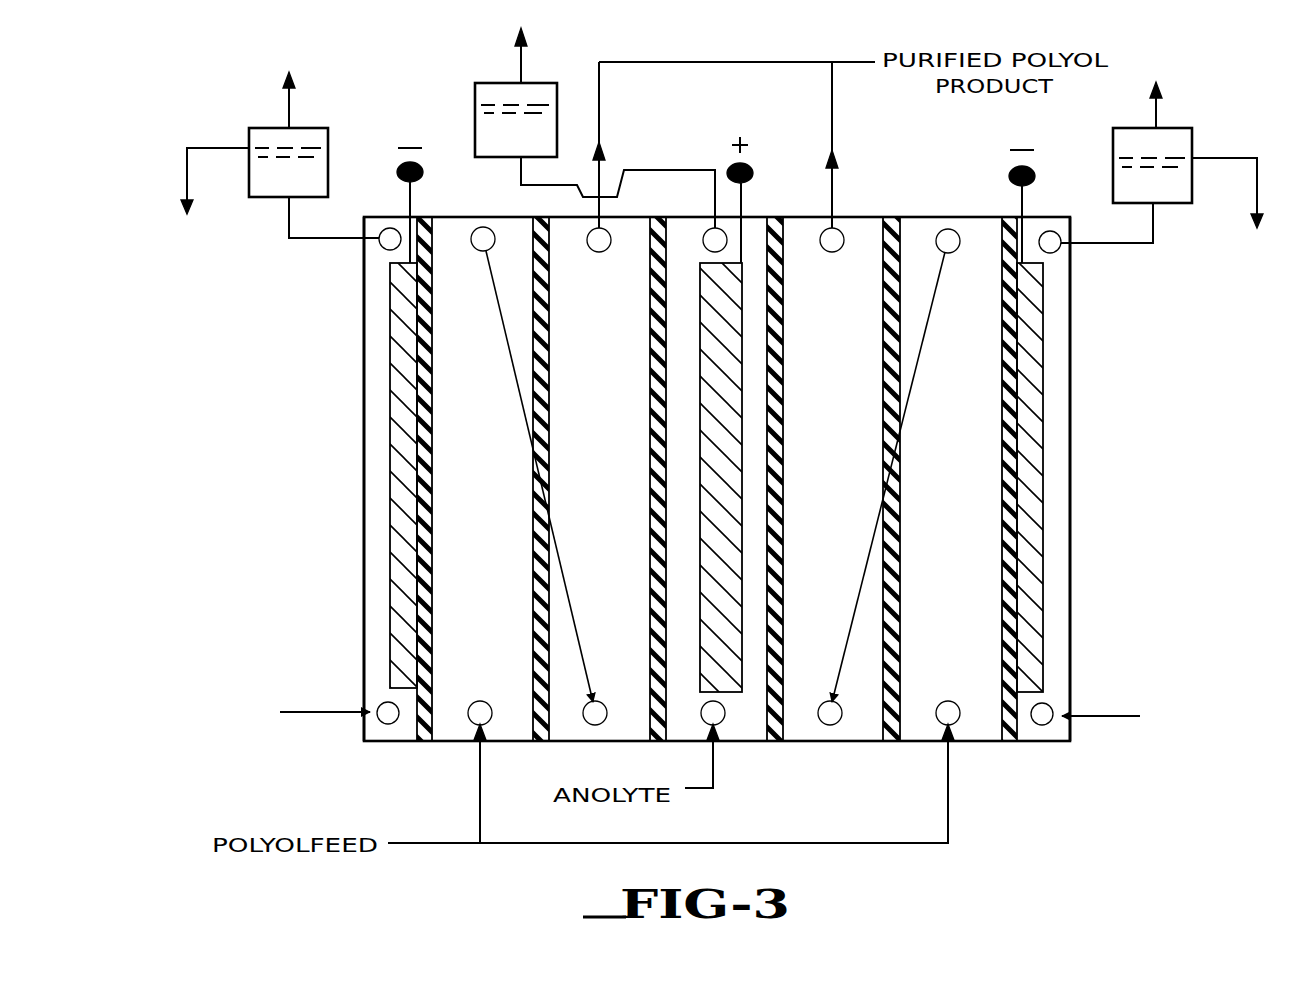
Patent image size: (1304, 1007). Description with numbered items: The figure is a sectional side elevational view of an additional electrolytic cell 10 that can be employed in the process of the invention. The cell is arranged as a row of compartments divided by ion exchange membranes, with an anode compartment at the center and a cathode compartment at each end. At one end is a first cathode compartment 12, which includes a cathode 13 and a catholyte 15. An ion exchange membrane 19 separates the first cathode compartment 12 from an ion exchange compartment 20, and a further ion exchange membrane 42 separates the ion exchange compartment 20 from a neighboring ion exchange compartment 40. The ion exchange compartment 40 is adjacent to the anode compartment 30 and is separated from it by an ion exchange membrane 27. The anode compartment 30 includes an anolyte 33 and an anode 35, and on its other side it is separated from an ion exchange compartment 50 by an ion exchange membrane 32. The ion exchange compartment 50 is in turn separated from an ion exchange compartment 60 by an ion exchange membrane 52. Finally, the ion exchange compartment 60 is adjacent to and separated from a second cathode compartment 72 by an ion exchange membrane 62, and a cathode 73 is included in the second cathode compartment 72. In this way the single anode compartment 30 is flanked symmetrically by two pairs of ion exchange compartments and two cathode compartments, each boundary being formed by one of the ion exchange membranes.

The electrolytic cell 10 is at (352, 470).
The first cathode compartment 12 is at (1060, 570).
The cathode 13 is at (1043, 312).
The catholyte 15 is at (300, 193).
The ion exchange membrane 19 is at (1010, 742).
The ion exchange compartment 20 is at (957, 501).
The ion exchange membrane 27 is at (775, 742).
The anode compartment 30 is at (693, 477).
The ion exchange membrane 32 is at (655, 218).
The anolyte 33 is at (528, 153).
The anode 35 is at (700, 570).
The ion exchange compartment 40 is at (848, 490).
The ion exchange membrane 42 is at (885, 742).
The ion exchange compartment 50 is at (610, 499).
The ion exchange membrane 52 is at (540, 742).
The ion exchange compartment 60 is at (499, 502).
The ion exchange membrane 62 is at (425, 741).
The second cathode compartment 72 is at (378, 557).
The cathode 73 is at (397, 298).